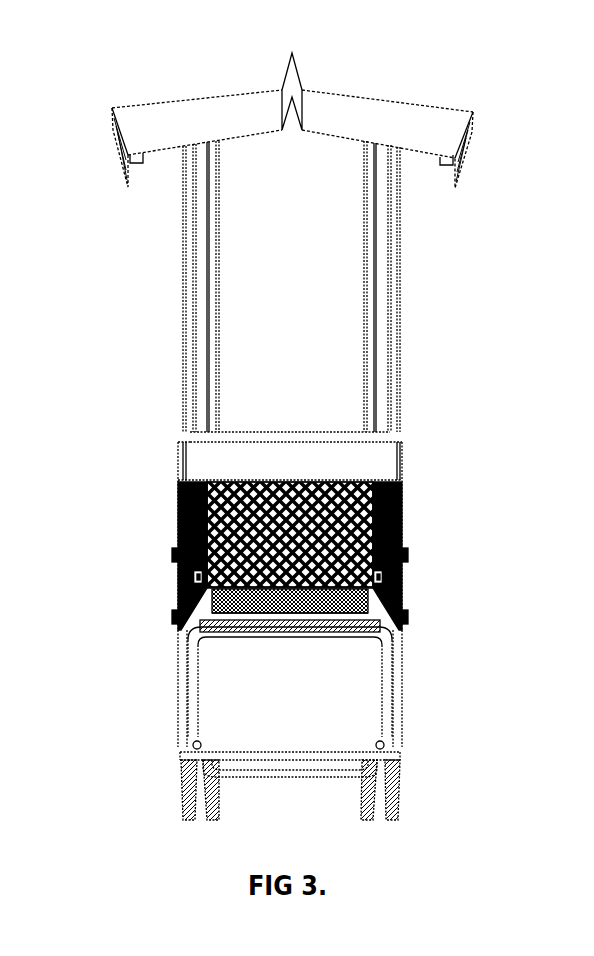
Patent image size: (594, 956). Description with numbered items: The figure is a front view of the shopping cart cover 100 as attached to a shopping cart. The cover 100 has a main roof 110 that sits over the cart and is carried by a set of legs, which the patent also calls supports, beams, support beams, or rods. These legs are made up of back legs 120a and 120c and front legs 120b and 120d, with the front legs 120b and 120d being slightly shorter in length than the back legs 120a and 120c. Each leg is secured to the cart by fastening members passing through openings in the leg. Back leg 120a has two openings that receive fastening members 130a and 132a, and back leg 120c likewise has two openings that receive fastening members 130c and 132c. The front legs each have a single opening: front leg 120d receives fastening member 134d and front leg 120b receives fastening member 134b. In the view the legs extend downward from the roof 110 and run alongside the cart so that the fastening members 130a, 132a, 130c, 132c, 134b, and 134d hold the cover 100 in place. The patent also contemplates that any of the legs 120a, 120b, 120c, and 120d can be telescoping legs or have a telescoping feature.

The cover 100 is at (204, 76).
The main roof 110 is at (435, 115).
The back leg 120a is at (395, 237).
The front leg 120b is at (374, 340).
The back leg 120c is at (183, 237).
The front leg 120d is at (208, 341).
The fastening member 130a is at (405, 555).
The fastening member 130c is at (173, 555).
The fastening member 132a is at (407, 617).
The fastening member 132c is at (173, 618).
The fastening member 134b is at (403, 580).
The fastening member 134d is at (177, 575).